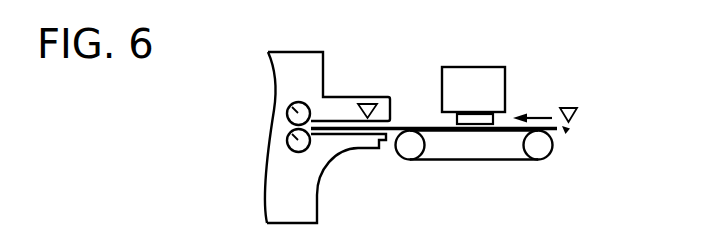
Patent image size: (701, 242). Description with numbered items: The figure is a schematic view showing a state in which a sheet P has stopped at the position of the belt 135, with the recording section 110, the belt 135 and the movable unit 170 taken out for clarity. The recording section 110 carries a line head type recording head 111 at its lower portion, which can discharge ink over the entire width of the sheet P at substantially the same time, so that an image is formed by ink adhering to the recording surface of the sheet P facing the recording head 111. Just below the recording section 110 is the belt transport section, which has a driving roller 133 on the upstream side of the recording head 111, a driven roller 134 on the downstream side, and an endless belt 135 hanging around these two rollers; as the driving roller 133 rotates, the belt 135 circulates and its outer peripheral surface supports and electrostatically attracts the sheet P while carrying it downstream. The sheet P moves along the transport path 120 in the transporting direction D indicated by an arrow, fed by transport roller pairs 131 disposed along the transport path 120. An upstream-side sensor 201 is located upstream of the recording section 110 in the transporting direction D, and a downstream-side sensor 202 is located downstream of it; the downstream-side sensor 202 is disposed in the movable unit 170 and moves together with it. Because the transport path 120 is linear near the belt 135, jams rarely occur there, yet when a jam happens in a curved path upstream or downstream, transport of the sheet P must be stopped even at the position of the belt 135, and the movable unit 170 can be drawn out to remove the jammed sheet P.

The recording section 110 is at (476, 78).
The recording head 111 is at (457, 117).
The transport path 120 is at (566, 130).
The transport roller pairs 131 is at (291, 134).
The driving roller 133 is at (538, 160).
The driven roller 134 is at (408, 160).
The belt 135 is at (470, 161).
The movable unit 170 is at (268, 183).
The upstream-side sensor 201 is at (568, 108).
The downstream-side sensor 202 is at (368, 104).
The sheet P is at (410, 125).
The transporting direction D is at (543, 115).